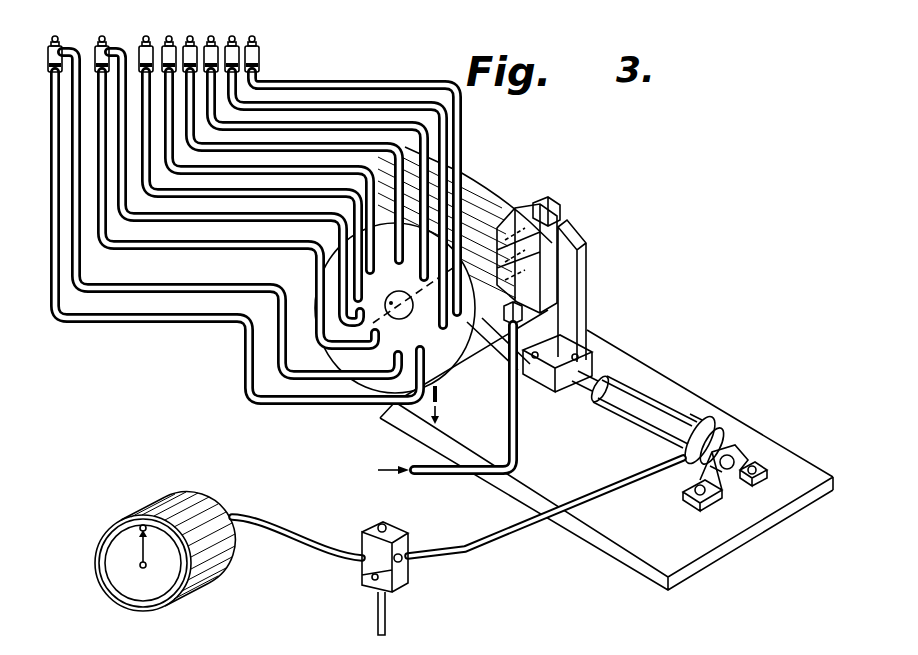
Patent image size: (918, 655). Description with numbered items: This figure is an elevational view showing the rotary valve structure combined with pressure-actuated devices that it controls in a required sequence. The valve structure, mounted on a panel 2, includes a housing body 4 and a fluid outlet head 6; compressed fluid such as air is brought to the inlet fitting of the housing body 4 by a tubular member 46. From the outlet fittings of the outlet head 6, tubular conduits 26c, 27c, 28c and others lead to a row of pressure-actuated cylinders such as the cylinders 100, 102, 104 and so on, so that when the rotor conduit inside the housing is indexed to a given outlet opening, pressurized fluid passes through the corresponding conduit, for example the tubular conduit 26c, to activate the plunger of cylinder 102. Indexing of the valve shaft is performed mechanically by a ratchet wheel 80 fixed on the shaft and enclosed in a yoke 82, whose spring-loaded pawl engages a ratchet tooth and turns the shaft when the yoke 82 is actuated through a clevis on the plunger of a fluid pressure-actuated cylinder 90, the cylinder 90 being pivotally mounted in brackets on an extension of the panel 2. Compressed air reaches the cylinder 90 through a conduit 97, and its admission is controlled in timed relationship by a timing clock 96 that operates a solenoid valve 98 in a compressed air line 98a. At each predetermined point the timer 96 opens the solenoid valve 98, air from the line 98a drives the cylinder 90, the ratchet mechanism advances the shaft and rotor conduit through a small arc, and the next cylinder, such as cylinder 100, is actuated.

The panel 2 is at (590, 258).
The housing body 4 is at (505, 208).
The fluid outlet head 6 is at (443, 355).
The tubular conduit 26c is at (377, 192).
The tubular conduit 27c is at (393, 103).
The tubular conduit 28c is at (313, 122).
The tubular member 46 is at (424, 474).
The ratchet wheel 80 is at (563, 225).
The yoke 82 is at (560, 293).
The fluid pressure-actuated cylinder 90 is at (640, 427).
The timing clock 96 is at (225, 513).
The conduit 97 is at (622, 480).
The solenoid valve 98 is at (400, 551).
The compressed air line 98a is at (387, 627).
The connector 100 is at (230, 24).
The cylinder 102 is at (260, 62).
The cylinder 104 is at (237, 50).